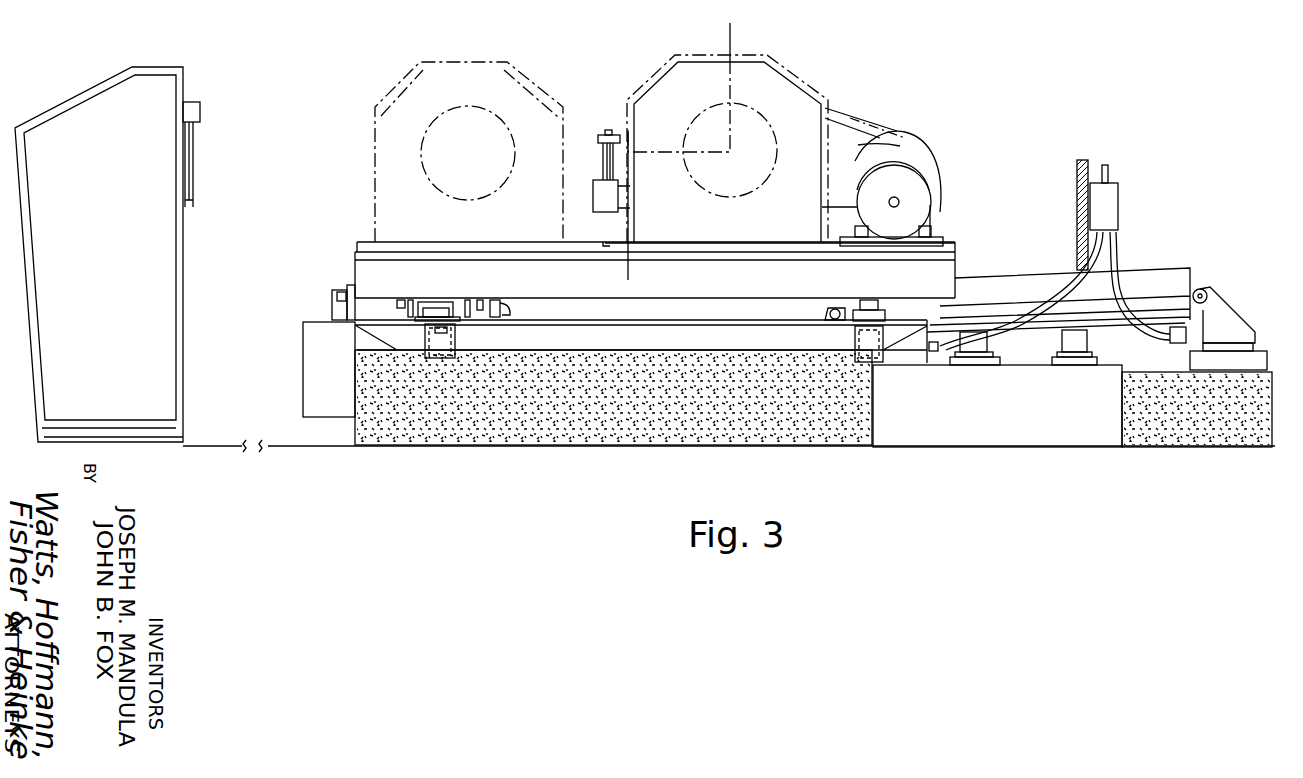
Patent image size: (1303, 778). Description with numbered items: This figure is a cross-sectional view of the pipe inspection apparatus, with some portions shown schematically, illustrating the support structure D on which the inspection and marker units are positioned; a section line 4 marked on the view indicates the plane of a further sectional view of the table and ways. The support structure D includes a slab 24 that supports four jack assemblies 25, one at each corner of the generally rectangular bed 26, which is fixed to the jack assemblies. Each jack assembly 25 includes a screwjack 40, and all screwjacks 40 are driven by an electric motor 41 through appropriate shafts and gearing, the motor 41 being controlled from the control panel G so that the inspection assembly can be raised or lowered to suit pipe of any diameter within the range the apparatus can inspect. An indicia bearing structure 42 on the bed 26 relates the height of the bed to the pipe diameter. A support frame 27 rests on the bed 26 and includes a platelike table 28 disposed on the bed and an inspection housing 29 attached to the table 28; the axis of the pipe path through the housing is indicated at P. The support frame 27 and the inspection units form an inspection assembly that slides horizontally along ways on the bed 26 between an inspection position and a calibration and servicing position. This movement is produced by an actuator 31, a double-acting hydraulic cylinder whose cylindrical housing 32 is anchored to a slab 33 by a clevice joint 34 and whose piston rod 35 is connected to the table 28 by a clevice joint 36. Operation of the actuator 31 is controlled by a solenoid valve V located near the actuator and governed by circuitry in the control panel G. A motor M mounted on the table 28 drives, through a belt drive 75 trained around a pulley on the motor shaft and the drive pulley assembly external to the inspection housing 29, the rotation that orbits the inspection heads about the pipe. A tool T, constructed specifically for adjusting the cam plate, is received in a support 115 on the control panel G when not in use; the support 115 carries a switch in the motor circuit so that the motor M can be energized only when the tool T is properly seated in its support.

The control panel G is at (99, 254).
The support 115 is at (203, 109).
The tool T is at (196, 163).
The support structure D is at (300, 352).
The inspection housing 29 is at (650, 118).
The pipe axis P is at (730, 150).
The section line 4- 4 is at (720, 35).
The platelike table 28 is at (698, 248).
The bed 26 is at (945, 281).
The indicia bearing structure 42 is at (350, 285).
The screwjack 40 is at (450, 298).
The piston rod 35 is at (860, 304).
The clevice joint 36 is at (830, 310).
The electric motor 41 is at (455, 335).
The jack assembly 25 is at (886, 367).
The slab 24 is at (862, 436).
The slab 33 is at (1120, 406).
The motor M is at (917, 188).
The support frame 27 is at (832, 100).
The belt drive 75 is at (870, 128).
The solenoid valve V is at (1113, 206).
The cylindrical housing 32 is at (1150, 270).
The actuator 31 is at (1106, 322).
The clevice joint 34 is at (1210, 291).